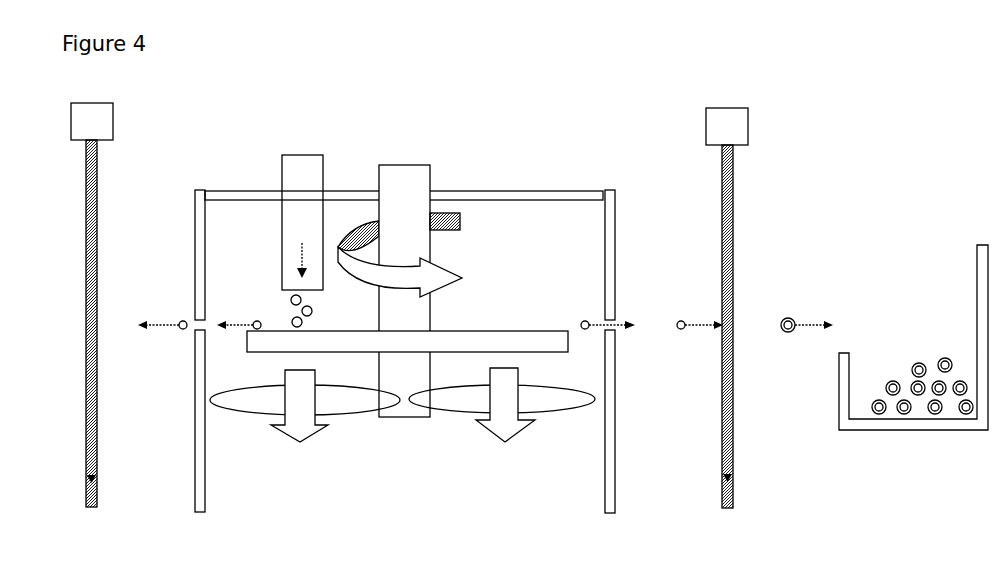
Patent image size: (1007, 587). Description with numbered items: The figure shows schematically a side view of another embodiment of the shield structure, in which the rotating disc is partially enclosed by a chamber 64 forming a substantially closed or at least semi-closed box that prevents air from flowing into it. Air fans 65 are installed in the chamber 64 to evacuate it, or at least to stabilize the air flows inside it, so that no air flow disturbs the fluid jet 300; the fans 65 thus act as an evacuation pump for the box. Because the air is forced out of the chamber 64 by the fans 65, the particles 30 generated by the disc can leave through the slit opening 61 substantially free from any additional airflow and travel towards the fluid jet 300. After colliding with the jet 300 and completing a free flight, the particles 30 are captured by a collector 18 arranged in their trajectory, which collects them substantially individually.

The chamber 64 is at (520, 198).
The slit opening 61 is at (198, 330).
The air fans 65 is at (335, 418).
The particles 30 is at (787, 322).
The fluid jet 300 is at (722, 455).
The collector 18 is at (891, 421).